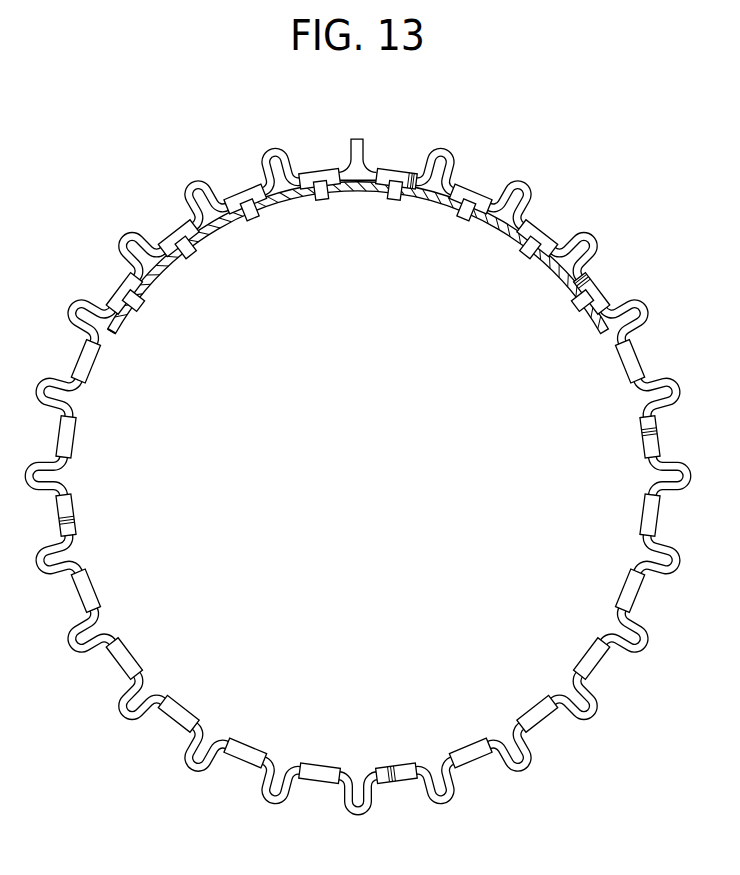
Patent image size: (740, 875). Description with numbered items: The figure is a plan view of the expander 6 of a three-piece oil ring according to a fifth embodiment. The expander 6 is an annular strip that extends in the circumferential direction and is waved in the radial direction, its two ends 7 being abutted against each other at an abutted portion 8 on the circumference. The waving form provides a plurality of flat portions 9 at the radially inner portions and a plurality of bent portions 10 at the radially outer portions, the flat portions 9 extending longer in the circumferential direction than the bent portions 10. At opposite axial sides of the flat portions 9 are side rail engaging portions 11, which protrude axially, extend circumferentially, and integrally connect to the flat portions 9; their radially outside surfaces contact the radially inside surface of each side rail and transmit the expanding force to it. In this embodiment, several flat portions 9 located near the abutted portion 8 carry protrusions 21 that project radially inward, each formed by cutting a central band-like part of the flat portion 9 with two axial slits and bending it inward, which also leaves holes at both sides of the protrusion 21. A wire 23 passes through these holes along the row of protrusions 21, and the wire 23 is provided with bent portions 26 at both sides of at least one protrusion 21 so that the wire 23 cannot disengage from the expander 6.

The expander 6 is at (358, 452).
The ends 7 is at (345, 136).
The abutted portion 8 is at (357, 145).
The flat portions 9 is at (194, 240).
The bent portions 10 is at (264, 158).
The side rail engaging portions 11 is at (236, 198).
The protrusions 21 is at (358, 271).
The wire 23 is at (215, 229).
The bent portions 26 is at (128, 320).